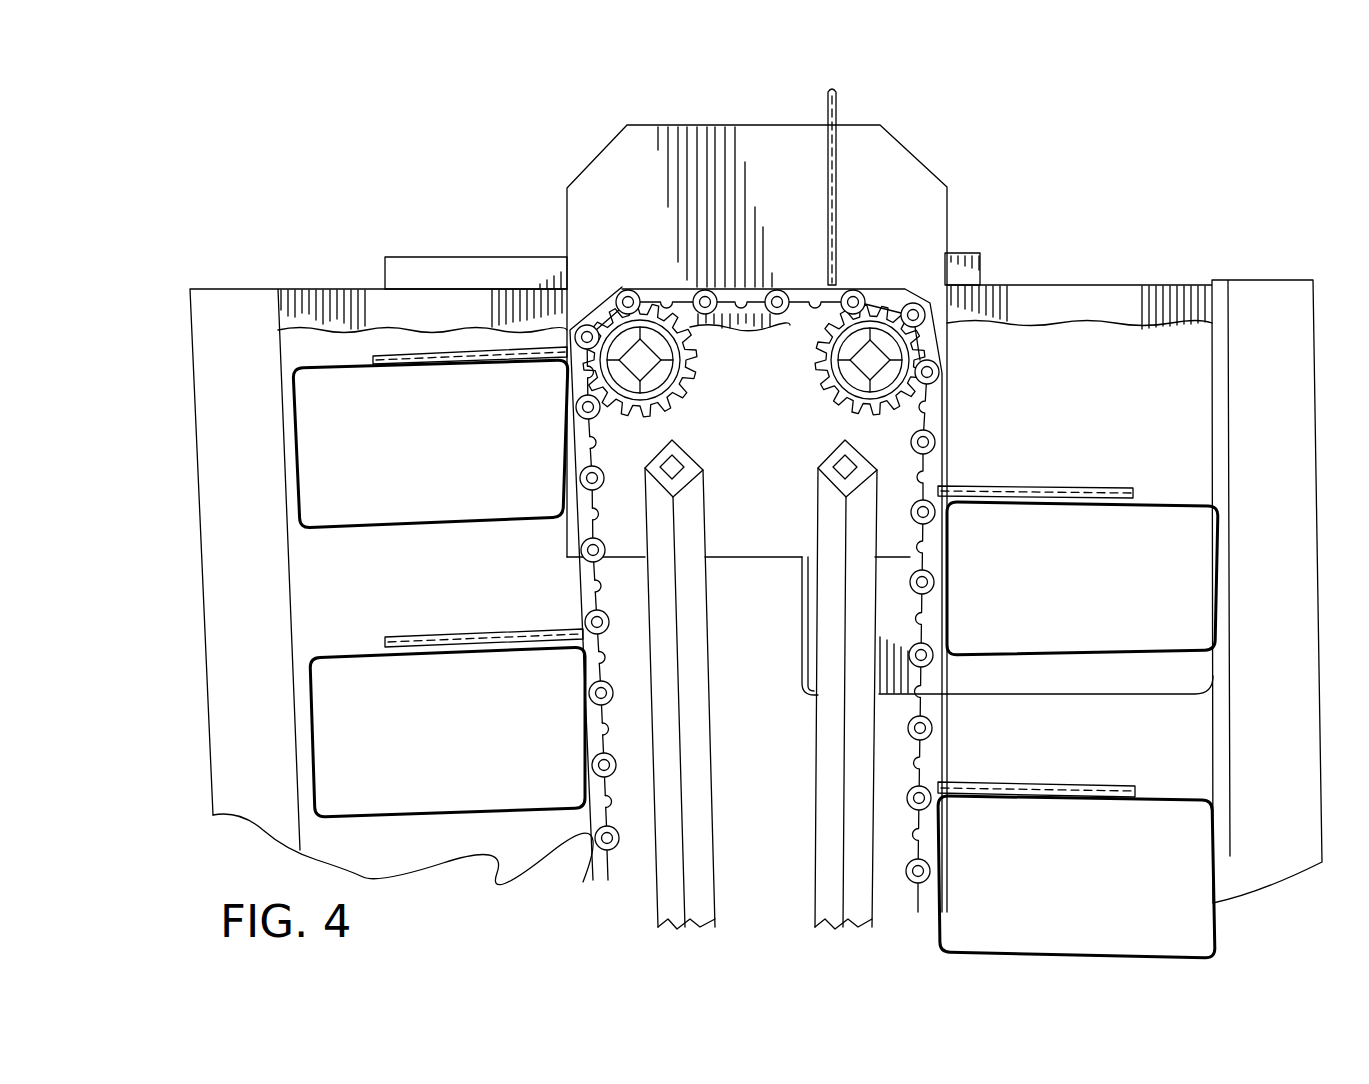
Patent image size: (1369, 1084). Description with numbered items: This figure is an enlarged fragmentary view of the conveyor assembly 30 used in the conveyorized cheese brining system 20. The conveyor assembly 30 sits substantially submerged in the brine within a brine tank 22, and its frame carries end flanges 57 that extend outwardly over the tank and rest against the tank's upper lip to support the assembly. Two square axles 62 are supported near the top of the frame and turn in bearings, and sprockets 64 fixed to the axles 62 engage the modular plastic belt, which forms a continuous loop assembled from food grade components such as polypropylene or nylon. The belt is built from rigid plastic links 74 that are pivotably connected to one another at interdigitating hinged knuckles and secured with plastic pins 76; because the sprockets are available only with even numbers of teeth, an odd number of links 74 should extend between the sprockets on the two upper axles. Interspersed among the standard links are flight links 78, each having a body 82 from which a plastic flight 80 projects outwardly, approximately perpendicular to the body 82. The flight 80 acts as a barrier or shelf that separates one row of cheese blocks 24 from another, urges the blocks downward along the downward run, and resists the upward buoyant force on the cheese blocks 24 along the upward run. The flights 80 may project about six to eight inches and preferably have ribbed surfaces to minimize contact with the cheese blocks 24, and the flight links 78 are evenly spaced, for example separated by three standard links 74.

The conveyorized cheese brining system 20 is at (358, 241).
The brine tank 22 is at (202, 615).
The cheese block 24 is at (418, 456).
The conveyor assembly 30 is at (607, 787).
The end flange 57 is at (483, 257).
The square axle 62 is at (833, 403).
The sprocket 64 is at (853, 421).
The link 74 is at (577, 532).
The plastic pin 76 is at (613, 620).
The flight link 78 is at (608, 658).
The flight 80 is at (838, 198).
The body 82 is at (608, 672).